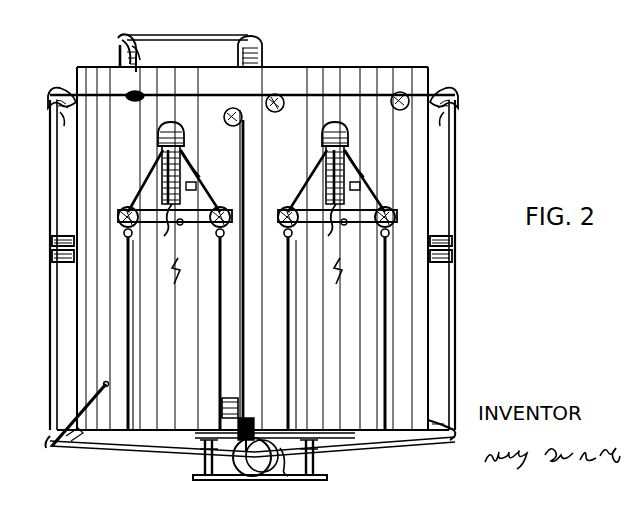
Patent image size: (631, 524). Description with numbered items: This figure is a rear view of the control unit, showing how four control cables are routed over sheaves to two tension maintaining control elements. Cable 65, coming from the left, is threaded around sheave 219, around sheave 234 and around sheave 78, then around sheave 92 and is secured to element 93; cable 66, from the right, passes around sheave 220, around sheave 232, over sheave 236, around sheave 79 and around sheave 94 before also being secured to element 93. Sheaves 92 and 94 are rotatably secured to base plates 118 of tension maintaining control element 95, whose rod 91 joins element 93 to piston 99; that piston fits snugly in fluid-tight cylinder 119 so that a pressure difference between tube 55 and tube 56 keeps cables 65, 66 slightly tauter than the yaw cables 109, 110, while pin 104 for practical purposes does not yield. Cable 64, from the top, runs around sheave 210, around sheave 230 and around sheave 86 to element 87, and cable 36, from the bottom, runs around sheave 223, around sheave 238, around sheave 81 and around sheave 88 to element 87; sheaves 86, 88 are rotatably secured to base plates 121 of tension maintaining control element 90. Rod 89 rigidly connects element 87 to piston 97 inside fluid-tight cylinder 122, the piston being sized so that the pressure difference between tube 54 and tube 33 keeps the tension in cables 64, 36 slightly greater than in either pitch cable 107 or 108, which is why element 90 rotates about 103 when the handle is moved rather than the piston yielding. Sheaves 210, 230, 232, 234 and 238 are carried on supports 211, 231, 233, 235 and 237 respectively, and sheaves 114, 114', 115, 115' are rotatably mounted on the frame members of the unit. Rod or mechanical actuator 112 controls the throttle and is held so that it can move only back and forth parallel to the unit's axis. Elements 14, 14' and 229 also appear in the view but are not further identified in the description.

The side channel 14 is at (47, 265).
The side channel 14' is at (464, 265).
The tube 33 is at (148, 232).
The cable 36 is at (245, 276).
The tube 54 is at (197, 175).
The tube 55 is at (295, 232).
The tube 56 is at (357, 175).
The cable 64 is at (176, 38).
The cable 65 is at (455, 179).
The cable 66 is at (50, 180).
The sheave 78 is at (388, 94).
The sheave 79 is at (273, 92).
The sheave 81 is at (240, 120).
The sheave 86 is at (120, 226).
The element 87 is at (182, 144).
The sheave 88 is at (216, 230).
The rod 89 is at (158, 162).
The tension maintaining control element 90 is at (163, 268).
The rod 91 is at (322, 160).
The sheave 92 is at (386, 224).
The element 93 is at (346, 140).
The sheave 94 is at (282, 228).
The tension maintaining control element 95 is at (332, 266).
The piston 97 is at (197, 189).
The piston 99 is at (357, 189).
The pivot 103 is at (170, 232).
The pin 104 is at (339, 226).
The cable 107 is at (130, 282).
The cable 108 is at (192, 282).
The cable 109 is at (352, 282).
The cable 110 is at (288, 282).
The rod or mechanical actuator 112 is at (94, 406).
The sheave 114 is at (44, 262).
The sheave 114' is at (459, 262).
The sheave 115 is at (64, 448).
The sheave 115' is at (442, 440).
The base plates 118 is at (330, 120).
The cylinder 119 is at (318, 176).
The base plates 121 is at (169, 122).
The cylinder 122 is at (152, 178).
The sheave 210 is at (250, 38).
The sheave support 211 is at (258, 60).
The sheave 219 is at (452, 243).
The sheave 220 is at (52, 243).
The sheave 223 is at (244, 472).
The hose 229 is at (286, 478).
The sheave 230 is at (122, 41).
The sheave support 231 is at (140, 58).
The sheave 232 is at (59, 90).
The sheave support 233 is at (63, 126).
The sheave 234 is at (450, 90).
The sheave support 235 is at (441, 125).
The sheave 236 is at (152, 89).
The sheave support 237 is at (252, 424).
The sheave 238 is at (235, 408).